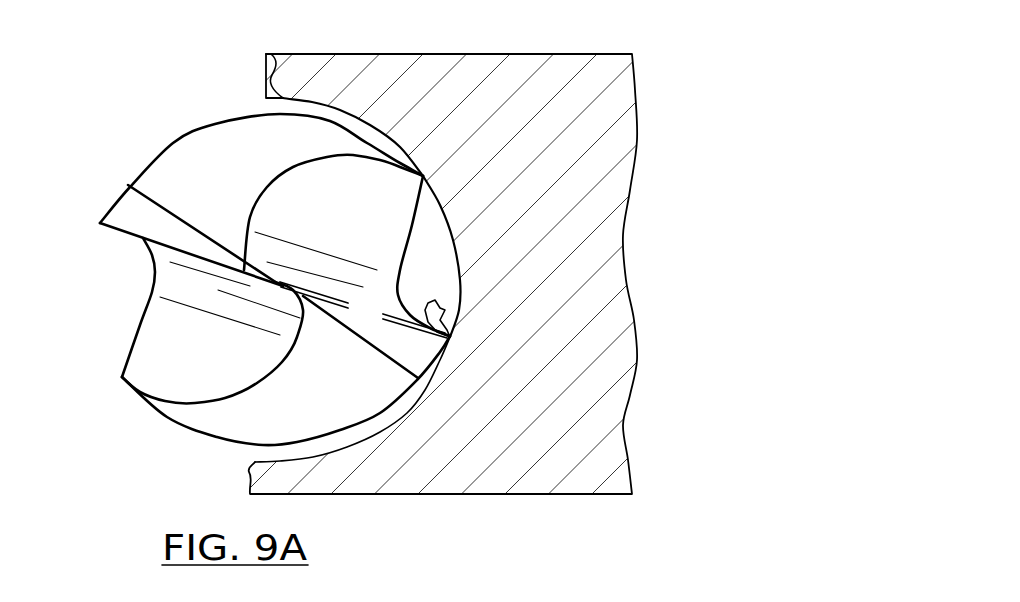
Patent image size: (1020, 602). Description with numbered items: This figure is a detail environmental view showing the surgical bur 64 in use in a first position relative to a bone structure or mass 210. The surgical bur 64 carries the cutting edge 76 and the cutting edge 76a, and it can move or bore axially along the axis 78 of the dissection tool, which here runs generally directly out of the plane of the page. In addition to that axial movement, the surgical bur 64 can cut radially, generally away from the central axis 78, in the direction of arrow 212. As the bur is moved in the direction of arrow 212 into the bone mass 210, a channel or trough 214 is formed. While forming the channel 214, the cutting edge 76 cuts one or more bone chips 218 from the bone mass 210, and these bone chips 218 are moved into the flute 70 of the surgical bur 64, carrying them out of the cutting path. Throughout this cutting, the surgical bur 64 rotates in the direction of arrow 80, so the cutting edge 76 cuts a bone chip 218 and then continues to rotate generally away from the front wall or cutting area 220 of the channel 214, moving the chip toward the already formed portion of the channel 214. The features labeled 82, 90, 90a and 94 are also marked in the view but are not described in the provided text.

The surgical bur 64 is at (172, 142).
The flute 70 is at (330, 183).
The cutting edge 76 is at (455, 333).
The cutting edge 76a is at (100, 223).
The axis 78 is at (262, 280).
The arrow 80 is at (184, 39).
The cutting lip 82 is at (363, 310).
The hole 90 is at (123, 377).
The hole wall 90a is at (425, 177).
The cutting corners 94 is at (414, 185).
The bone structure or mass 210 is at (617, 134).
The arrow 212 is at (150, 77).
The channel or trough 214 is at (277, 88).
The bone chips 218 is at (428, 307).
The front wall or cutting area 220 is at (420, 393).